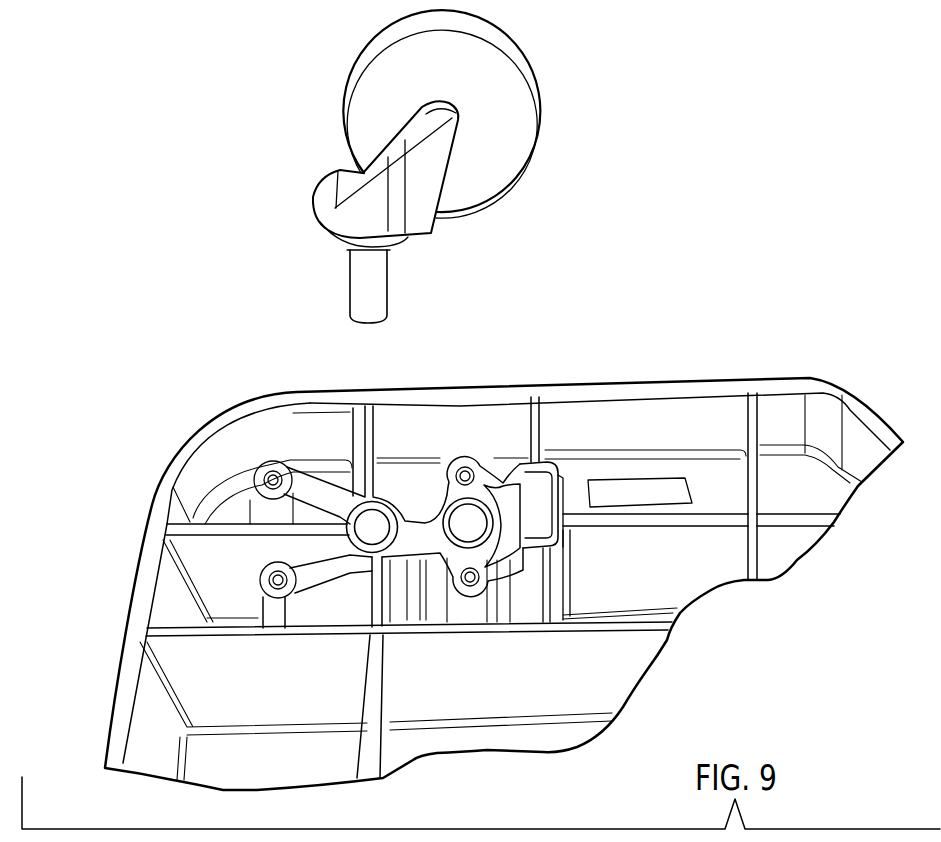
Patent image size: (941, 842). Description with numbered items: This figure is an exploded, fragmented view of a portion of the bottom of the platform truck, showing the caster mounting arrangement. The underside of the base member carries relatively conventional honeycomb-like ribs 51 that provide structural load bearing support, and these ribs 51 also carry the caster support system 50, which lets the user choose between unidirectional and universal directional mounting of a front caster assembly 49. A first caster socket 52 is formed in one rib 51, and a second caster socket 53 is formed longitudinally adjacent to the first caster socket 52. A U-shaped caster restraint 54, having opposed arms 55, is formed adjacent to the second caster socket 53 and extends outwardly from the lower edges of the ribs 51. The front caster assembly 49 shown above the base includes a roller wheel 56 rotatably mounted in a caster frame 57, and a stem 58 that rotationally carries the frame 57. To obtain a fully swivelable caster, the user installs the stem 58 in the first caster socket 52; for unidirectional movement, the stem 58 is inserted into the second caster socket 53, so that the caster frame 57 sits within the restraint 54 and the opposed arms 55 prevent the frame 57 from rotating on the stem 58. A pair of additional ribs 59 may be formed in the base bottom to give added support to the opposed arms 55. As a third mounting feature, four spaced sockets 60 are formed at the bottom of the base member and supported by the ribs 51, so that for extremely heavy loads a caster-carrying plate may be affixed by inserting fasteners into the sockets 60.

The front caster assembly 49 is at (552, 83).
The caster support system 50 is at (393, 493).
The honeycomb-like ribs 51 is at (368, 420).
The first caster socket 52 is at (371, 525).
The second caster socket 53 is at (473, 520).
The U-shaped caster restraint 54 is at (563, 510).
The opposed arms 55 is at (550, 463).
The roller wheel 56 is at (376, 47).
The caster frame 57 is at (427, 155).
The stem 58 is at (380, 288).
The additional ribs 59 is at (537, 466).
The sockets 60 is at (467, 470).